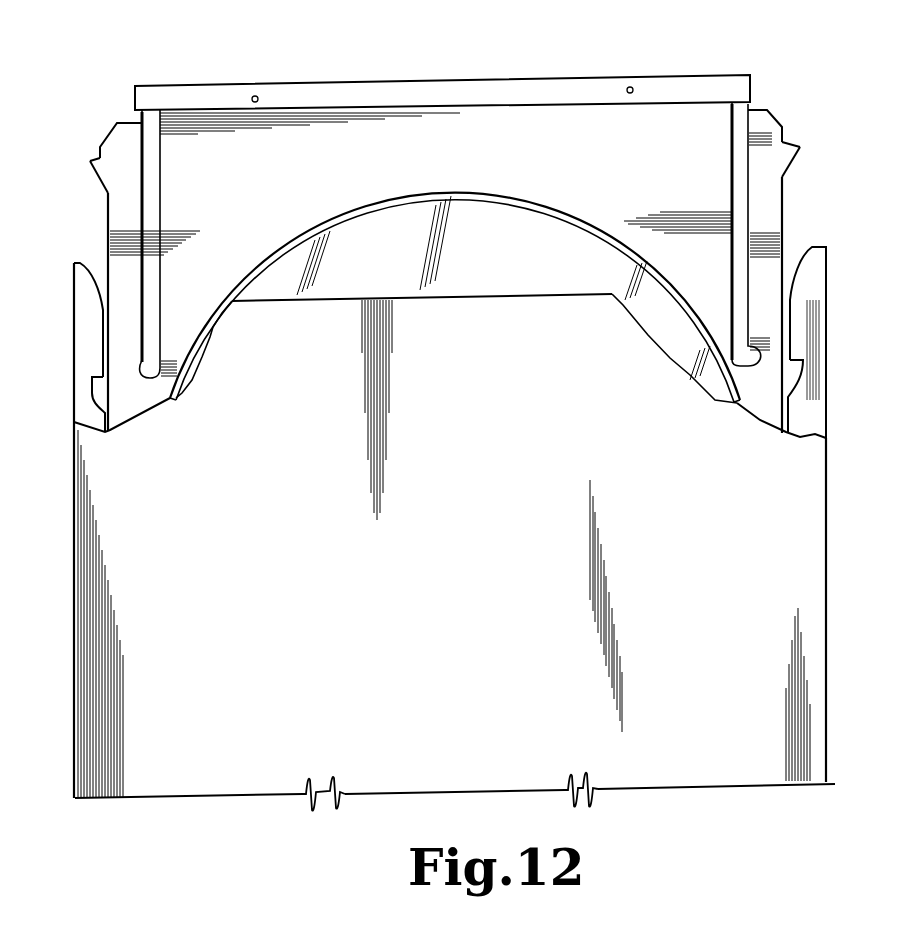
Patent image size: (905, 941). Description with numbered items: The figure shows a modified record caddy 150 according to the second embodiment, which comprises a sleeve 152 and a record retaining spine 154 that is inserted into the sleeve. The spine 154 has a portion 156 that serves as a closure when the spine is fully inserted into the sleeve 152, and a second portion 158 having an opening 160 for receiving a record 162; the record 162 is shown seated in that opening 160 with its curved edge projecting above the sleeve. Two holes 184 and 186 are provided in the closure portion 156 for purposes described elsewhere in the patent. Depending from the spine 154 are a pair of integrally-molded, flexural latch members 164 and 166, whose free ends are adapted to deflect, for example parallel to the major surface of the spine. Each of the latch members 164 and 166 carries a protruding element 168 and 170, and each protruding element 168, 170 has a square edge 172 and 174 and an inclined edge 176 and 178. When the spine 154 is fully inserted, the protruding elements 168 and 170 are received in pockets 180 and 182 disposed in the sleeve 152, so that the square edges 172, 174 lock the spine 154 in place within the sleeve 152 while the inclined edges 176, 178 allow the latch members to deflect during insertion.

The modified record caddy 150 is at (354, 30).
The sleeve 152 is at (201, 606).
The record retaining spine 154 is at (94, 126).
The closure portion 156 is at (386, 88).
The portion having an opening 158 is at (200, 123).
The opening 160 is at (300, 236).
The record 162 is at (490, 286).
The flexural latch member 164 is at (101, 254).
The flexural latch member 166 is at (793, 258).
The protruding element 168 is at (105, 172).
The protruding element 170 is at (765, 157).
The square edge 172 is at (100, 156).
The square edge 174 is at (792, 147).
The inclined edge 176 is at (108, 170).
The inclined edge 178 is at (792, 162).
The pocket 180 is at (101, 393).
The pocket 182 is at (793, 377).
The hole 184 is at (257, 96).
The hole 186 is at (633, 87).